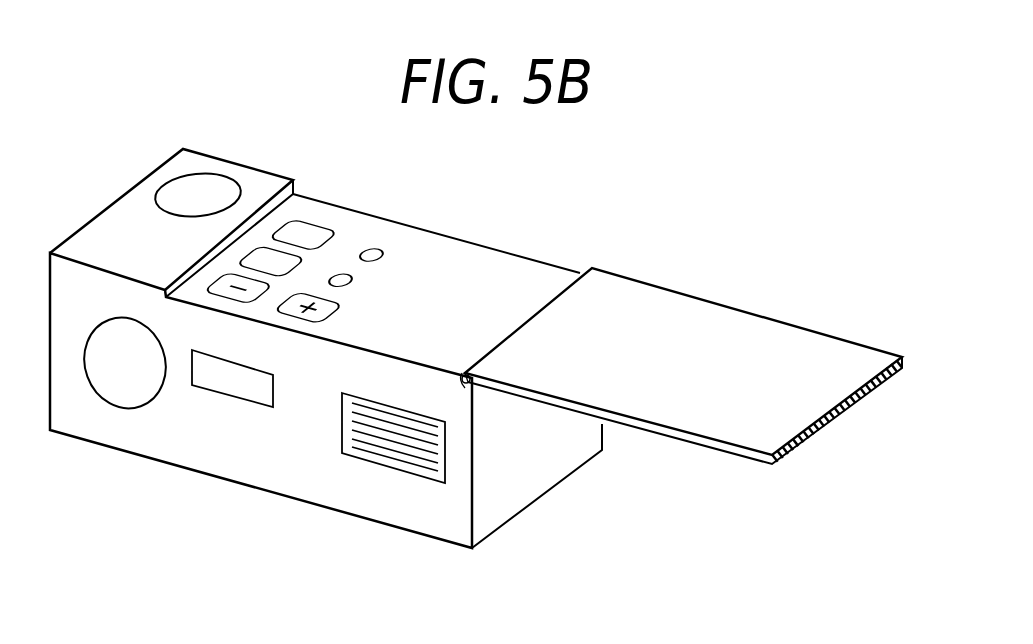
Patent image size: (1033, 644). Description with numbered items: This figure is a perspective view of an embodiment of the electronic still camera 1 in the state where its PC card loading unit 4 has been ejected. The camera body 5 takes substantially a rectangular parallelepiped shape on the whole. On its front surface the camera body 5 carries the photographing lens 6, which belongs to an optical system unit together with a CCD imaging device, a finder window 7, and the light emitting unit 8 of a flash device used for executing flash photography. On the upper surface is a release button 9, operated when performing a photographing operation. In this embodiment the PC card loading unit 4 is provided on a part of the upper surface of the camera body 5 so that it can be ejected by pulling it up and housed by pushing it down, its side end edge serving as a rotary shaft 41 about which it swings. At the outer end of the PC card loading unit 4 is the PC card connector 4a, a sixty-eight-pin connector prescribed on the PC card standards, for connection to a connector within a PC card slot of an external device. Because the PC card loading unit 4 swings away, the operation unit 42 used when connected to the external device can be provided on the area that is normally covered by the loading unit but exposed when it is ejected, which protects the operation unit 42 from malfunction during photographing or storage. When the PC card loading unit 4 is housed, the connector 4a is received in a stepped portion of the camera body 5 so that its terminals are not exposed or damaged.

The electronic still camera 1 is at (542, 177).
The PC card loading unit 4 is at (747, 322).
The PC card connector 4a is at (833, 432).
The camera body 5 is at (123, 208).
The photographing lens 6 is at (112, 393).
The finder window 7 is at (212, 386).
The light emitting unit 8 is at (373, 458).
The release button 9 is at (198, 180).
The rotary shaft 41 is at (466, 387).
The operation unit 42 is at (360, 230).